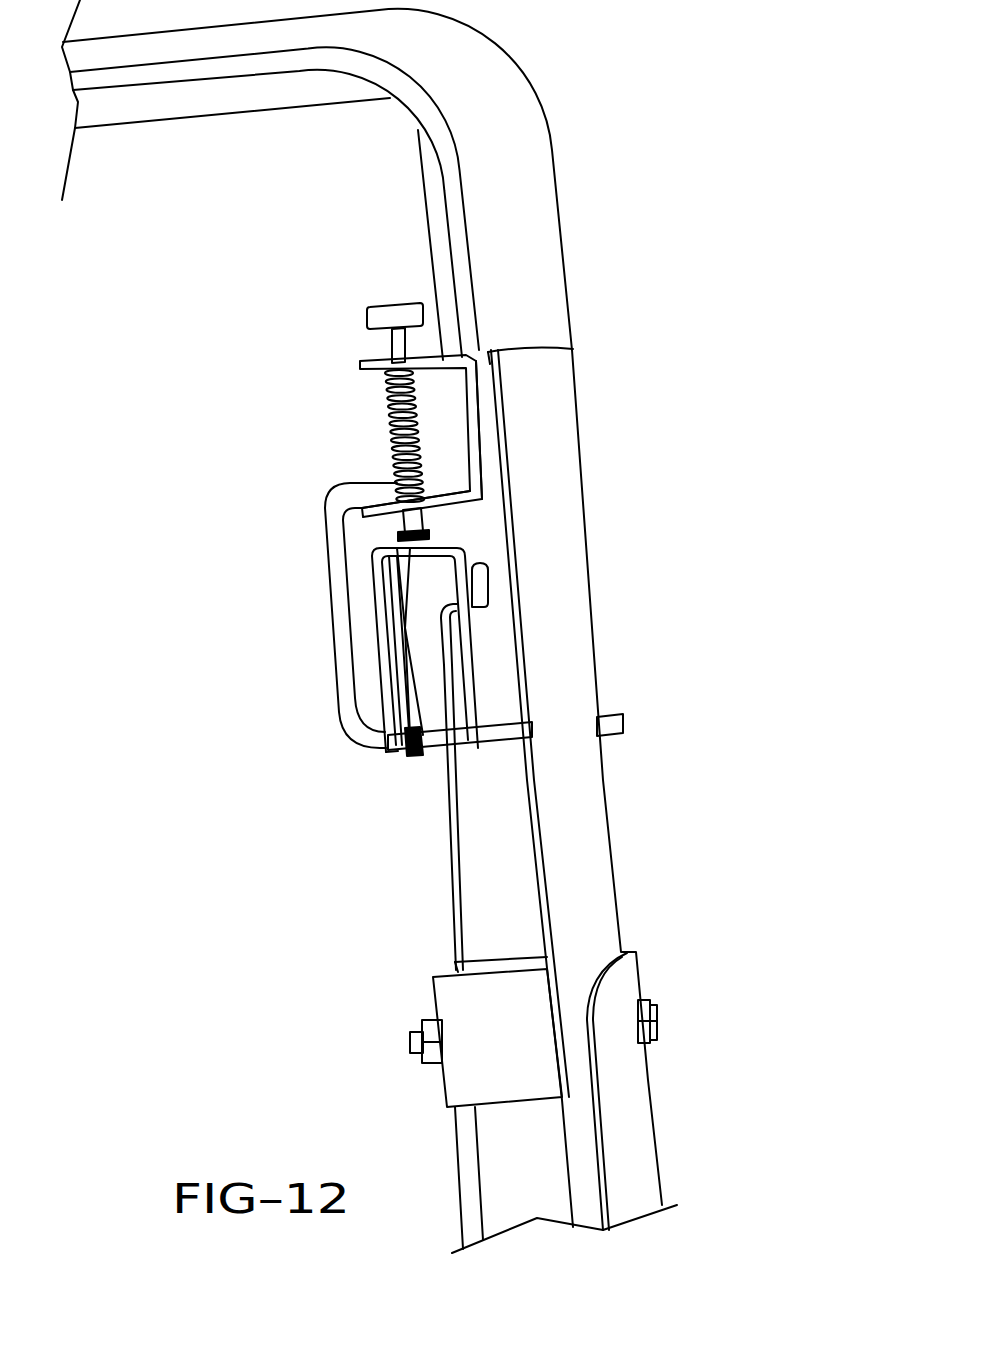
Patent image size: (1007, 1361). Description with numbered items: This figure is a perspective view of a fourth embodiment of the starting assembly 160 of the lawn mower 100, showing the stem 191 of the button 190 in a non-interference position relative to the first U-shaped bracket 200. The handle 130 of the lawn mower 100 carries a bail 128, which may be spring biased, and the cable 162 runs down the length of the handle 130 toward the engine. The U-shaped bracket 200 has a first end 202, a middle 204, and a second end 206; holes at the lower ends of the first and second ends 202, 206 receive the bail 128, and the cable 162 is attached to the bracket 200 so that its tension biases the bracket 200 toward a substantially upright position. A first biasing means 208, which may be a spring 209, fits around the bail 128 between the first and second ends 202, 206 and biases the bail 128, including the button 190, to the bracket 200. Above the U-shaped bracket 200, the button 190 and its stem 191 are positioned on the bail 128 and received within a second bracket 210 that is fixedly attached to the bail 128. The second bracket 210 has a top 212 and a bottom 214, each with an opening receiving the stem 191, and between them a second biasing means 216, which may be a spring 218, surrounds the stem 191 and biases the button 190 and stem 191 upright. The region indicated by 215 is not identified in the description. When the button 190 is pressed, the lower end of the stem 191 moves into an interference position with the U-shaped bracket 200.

The lawn mower 100 is at (592, 273).
The bail 128 is at (397, 105).
The handle 130 is at (466, 83).
The starting assembly 160 is at (228, 453).
The cable 162 is at (463, 957).
The button 190 is at (373, 310).
The stem 191 is at (395, 348).
The first U-shaped bracket 200 is at (388, 743).
The first end 202 is at (383, 648).
The middle 204 is at (428, 548).
The second end 206 is at (482, 752).
The first biasing means 208 is at (408, 768).
The spring 209 is at (442, 760).
The second bracket 210 is at (341, 436).
The top 212 is at (360, 364).
The bottom 214 is at (363, 513).
The bracket wall 215 is at (428, 374).
The second biasing means 216 is at (375, 437).
The spring 218 is at (400, 464).